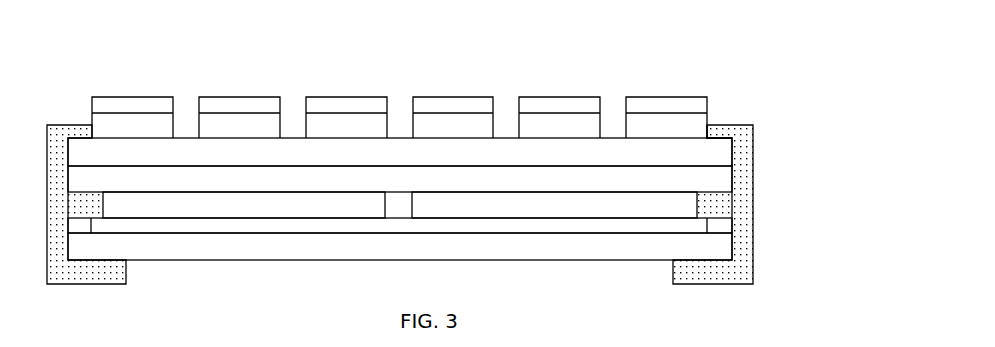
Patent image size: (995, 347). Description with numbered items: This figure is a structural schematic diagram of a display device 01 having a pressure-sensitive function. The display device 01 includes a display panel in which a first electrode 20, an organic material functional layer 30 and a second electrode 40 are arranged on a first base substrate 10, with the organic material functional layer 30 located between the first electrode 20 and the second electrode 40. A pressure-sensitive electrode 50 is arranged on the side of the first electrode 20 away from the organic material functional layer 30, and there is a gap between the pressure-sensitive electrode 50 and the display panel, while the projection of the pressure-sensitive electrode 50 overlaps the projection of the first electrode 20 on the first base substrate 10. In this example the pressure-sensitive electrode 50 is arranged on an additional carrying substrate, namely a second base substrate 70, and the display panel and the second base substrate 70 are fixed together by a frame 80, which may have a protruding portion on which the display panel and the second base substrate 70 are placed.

The display device 01 is at (127, 29).
The first base substrate 10 is at (290, 185).
The first electrode 20 is at (374, 152).
The organic material functional layer 30 is at (703, 125).
The second electrode 40 is at (640, 105).
The pressure-sensitive electrode 50 is at (528, 226).
The second base substrate 70 is at (609, 242).
The frame 80 is at (738, 150).